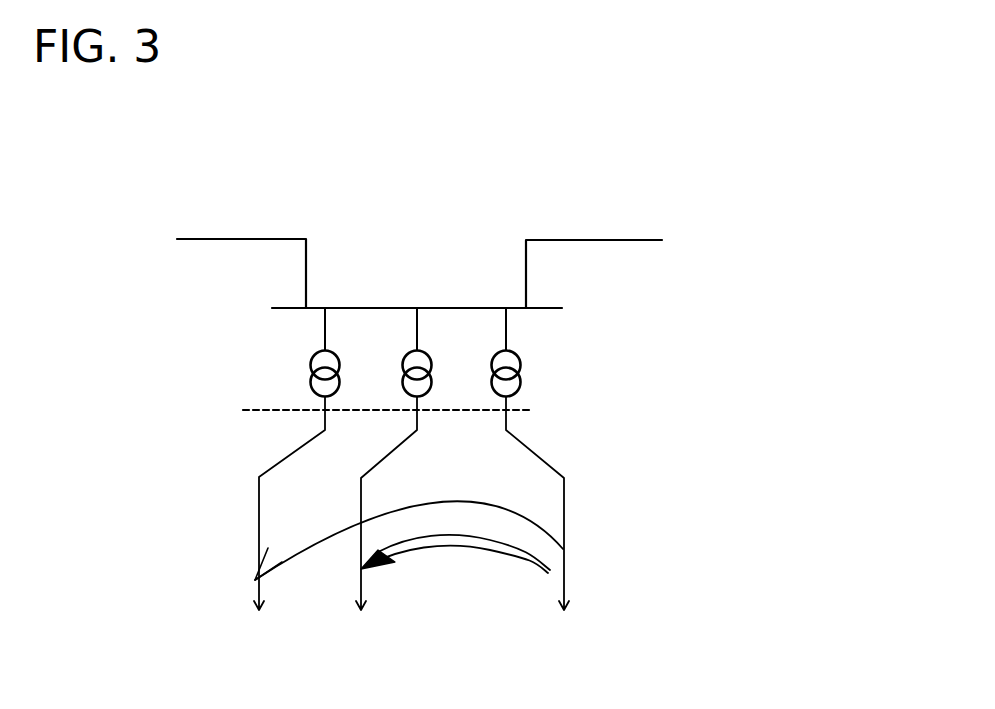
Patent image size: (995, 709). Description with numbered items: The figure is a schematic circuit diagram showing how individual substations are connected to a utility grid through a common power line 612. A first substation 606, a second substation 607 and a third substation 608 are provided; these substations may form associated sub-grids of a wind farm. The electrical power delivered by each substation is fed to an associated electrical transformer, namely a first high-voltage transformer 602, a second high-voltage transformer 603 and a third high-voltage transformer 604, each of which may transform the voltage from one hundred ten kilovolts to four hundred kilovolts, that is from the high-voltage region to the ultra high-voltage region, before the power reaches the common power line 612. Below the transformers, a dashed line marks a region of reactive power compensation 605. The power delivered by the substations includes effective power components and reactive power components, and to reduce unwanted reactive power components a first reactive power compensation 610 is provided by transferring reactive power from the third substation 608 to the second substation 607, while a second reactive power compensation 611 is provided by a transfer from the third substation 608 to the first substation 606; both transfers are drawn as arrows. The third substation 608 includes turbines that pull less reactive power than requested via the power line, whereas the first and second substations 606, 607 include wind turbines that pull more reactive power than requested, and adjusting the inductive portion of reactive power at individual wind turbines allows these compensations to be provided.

The first high-voltage transformer 602 is at (302, 362).
The second high-voltage transformer 603 is at (396, 362).
The third high-voltage transformer 604 is at (519, 367).
The region of reactive power compensation 605 is at (532, 413).
The first substation 606 is at (258, 612).
The second substation 607 is at (358, 613).
The third substation 608 is at (568, 614).
The first reactive power compensation 610 is at (442, 548).
The second reactive power compensation 611 is at (533, 529).
The common power line 612 is at (612, 239).